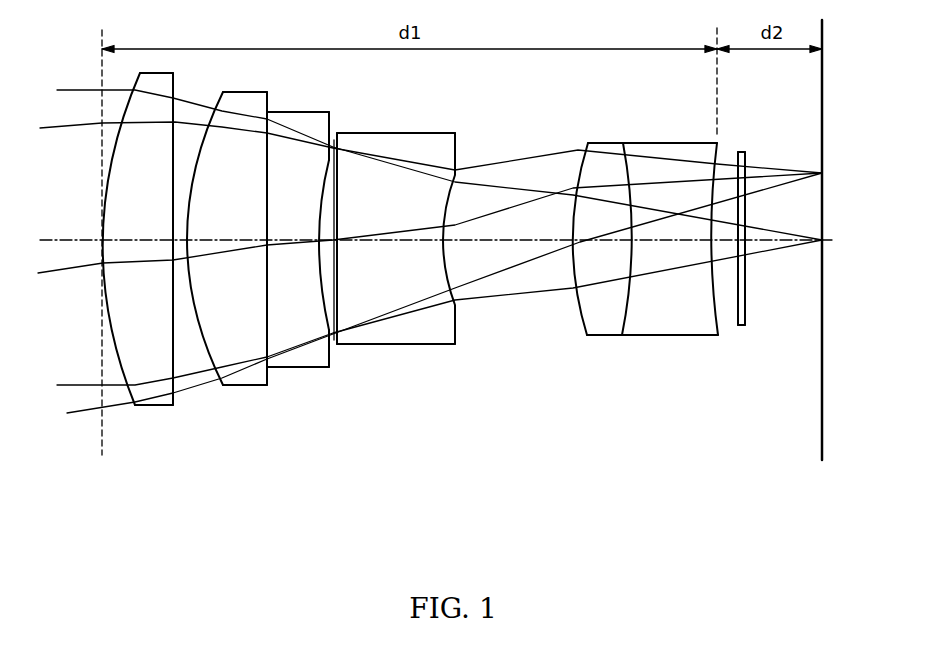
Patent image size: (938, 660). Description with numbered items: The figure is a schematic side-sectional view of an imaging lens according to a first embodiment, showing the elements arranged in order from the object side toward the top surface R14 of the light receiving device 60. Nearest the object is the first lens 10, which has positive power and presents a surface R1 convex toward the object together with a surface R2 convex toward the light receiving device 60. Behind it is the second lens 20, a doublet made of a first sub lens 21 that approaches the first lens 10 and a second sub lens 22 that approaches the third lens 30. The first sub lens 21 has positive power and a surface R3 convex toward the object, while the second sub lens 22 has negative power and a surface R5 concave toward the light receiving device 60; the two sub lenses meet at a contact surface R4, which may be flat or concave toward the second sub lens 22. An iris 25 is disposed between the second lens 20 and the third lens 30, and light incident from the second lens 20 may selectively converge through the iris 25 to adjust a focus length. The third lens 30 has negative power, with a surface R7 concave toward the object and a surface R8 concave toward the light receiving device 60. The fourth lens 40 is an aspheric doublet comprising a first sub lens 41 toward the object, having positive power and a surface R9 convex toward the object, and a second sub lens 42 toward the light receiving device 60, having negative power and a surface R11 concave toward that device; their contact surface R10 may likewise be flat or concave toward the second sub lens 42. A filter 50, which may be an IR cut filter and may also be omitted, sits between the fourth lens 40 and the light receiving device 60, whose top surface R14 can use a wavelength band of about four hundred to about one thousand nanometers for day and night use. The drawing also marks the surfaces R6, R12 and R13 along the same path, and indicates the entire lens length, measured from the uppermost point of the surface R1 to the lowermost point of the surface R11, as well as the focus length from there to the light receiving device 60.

The first lens 10 is at (153, 262).
The second lens 20 is at (287, 268).
The first sub lens 21 is at (244, 252).
The second sub lens 22 is at (327, 253).
The iris 25 is at (337, 128).
The third lens 30 is at (410, 274).
The fourth lens 40 is at (658, 257).
The first sub lens 41 is at (604, 241).
The second sub lens 42 is at (690, 247).
The filter 50 is at (750, 251).
The light receiving device 60 is at (827, 265).
The surface convex toward the object R1 is at (122, 364).
The surface convex toward the light receiving device R2 is at (177, 366).
The surface convex toward the object R3 is at (206, 362).
The contact surface R4 is at (271, 104).
The surface concave toward the light receiving device R5 is at (332, 293).
The object-side surface of fourth lens R6 is at (334, 346).
The surface concave toward the object R7 is at (325, 152).
The surface concave toward the light receiving device R8 is at (459, 323).
The surface convex toward the object R9 is at (578, 162).
The contact surface R10 is at (632, 167).
The surface concave toward the light receiving device R11 is at (719, 165).
The object-side surface of filter R12 is at (737, 306).
The image-side surface of filter R13 is at (747, 292).
The top surface R14 is at (835, 104).